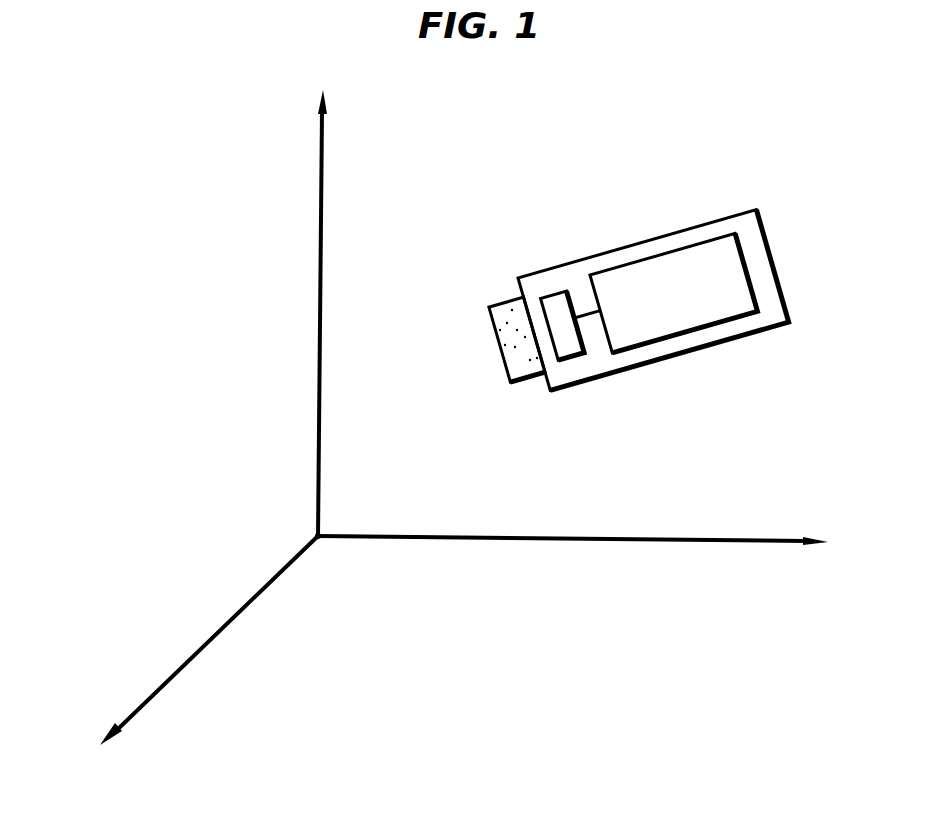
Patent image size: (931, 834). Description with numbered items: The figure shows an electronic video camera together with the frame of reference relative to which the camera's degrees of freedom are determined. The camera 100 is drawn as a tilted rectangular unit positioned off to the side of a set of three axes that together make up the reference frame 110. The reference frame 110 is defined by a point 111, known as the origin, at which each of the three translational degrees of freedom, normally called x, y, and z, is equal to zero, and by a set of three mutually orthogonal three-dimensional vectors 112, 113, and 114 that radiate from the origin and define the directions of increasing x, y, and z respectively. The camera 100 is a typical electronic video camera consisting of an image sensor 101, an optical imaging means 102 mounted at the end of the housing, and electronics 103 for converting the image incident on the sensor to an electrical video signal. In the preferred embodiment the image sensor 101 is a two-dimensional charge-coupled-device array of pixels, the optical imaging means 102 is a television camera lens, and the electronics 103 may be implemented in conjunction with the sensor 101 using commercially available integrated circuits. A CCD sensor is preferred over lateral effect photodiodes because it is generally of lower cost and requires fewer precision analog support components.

The camera 100 is at (780, 282).
The image sensor 101 is at (548, 293).
The optical imaging means 102 is at (505, 365).
The electronics 103 is at (670, 337).
The reference frame 110 is at (287, 367).
The point (origin) 111 is at (316, 534).
The three-dimensional vector 112 is at (610, 540).
The three-dimensional vector 113 is at (198, 653).
The three-dimensional vector 114 is at (320, 192).